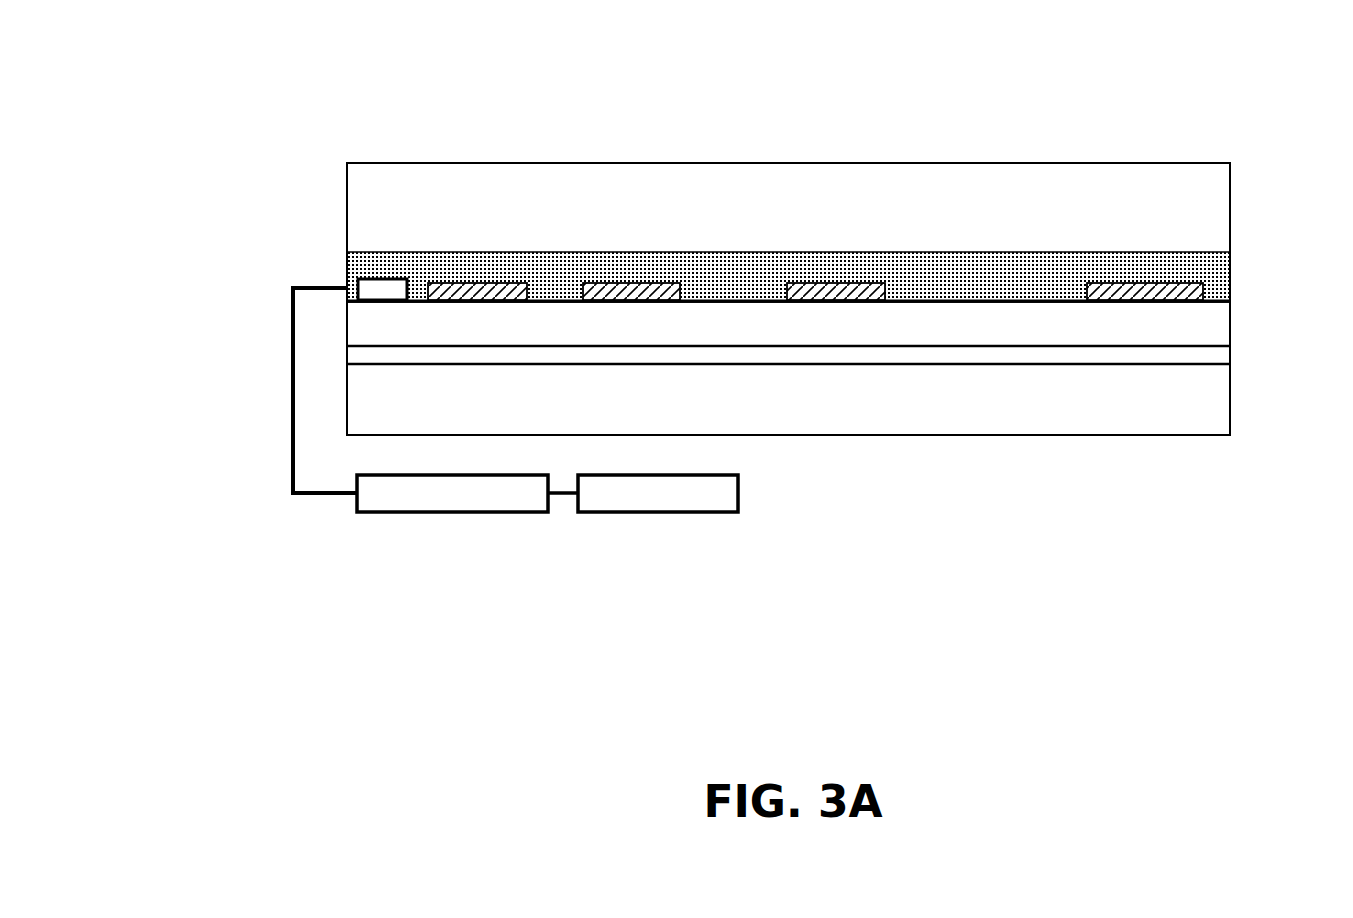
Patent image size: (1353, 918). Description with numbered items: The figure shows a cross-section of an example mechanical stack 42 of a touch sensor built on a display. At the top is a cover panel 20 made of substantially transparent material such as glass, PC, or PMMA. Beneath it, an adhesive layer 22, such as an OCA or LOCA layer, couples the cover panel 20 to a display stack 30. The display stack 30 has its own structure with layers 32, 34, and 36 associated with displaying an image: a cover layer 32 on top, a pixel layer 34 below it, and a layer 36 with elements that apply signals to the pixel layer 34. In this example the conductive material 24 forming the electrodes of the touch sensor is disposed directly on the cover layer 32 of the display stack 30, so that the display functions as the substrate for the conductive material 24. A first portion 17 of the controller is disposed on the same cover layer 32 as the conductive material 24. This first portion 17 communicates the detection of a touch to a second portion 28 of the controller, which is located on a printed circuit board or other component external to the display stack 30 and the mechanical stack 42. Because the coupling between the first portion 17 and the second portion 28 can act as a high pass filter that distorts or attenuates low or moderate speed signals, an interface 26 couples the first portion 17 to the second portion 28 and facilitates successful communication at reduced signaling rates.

The first portion of controller 17 is at (382, 309).
The cover panel 20 is at (1246, 211).
The adhesive layer 22 is at (334, 270).
The conductive material 24 is at (473, 280).
The interface 26 is at (450, 519).
The second portion of controller 28 is at (655, 519).
The display stack 30 is at (1237, 302).
The cover layer 32 is at (845, 328).
The pixel layer 34 is at (956, 354).
The layer with signal-applying elements 36 is at (1077, 407).
The mechanical stack 42 is at (283, 132).